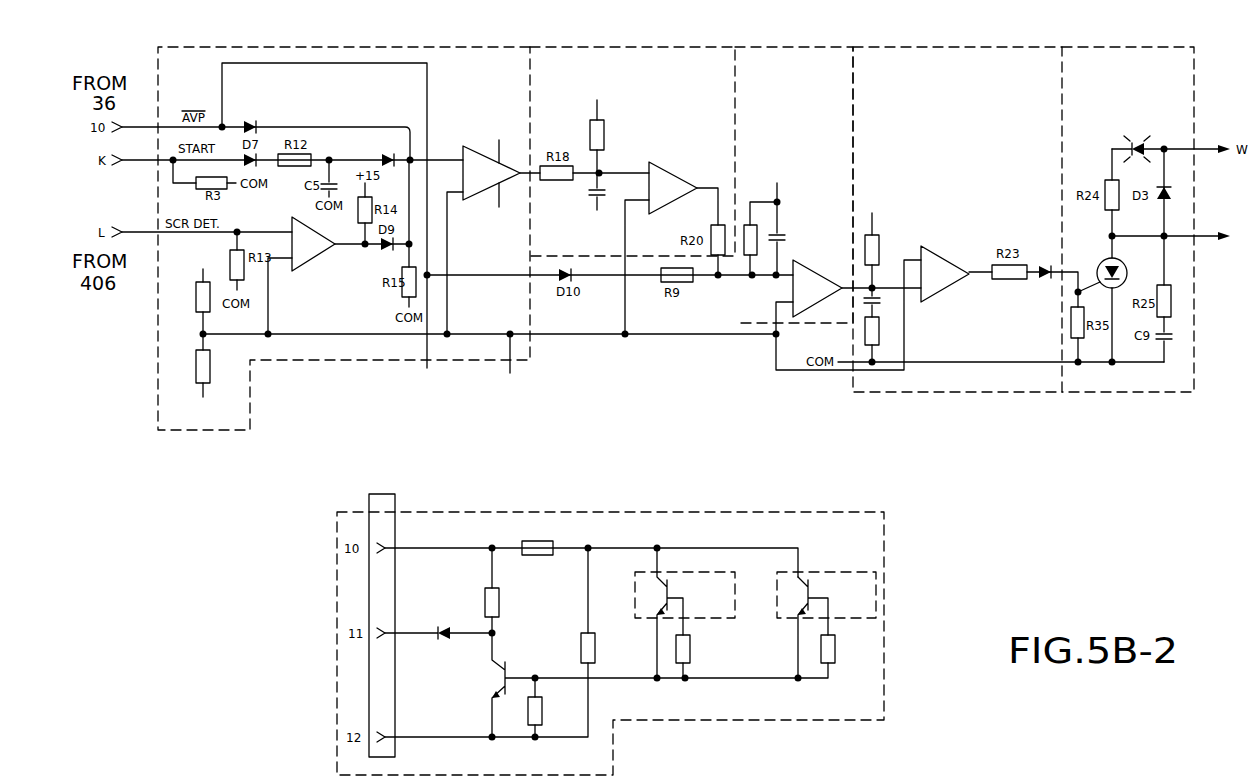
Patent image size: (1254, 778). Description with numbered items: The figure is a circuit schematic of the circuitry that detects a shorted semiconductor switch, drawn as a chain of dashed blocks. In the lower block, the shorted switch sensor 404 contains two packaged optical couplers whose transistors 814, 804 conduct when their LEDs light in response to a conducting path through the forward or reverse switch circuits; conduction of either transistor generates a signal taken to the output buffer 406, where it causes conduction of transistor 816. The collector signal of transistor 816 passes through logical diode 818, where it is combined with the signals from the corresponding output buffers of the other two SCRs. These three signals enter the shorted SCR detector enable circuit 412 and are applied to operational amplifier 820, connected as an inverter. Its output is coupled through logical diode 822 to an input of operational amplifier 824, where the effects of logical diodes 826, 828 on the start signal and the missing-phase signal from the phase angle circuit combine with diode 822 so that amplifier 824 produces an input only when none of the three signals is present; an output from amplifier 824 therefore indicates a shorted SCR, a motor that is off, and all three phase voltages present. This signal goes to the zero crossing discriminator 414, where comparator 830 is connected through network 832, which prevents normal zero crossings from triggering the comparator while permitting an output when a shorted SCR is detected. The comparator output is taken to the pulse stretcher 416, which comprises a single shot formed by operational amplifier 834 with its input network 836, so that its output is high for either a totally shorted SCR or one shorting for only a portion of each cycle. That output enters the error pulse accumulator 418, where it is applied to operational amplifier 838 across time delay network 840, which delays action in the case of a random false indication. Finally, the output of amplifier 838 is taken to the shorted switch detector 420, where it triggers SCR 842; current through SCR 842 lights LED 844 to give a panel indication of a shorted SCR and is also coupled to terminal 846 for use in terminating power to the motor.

The shorted switch sensor 404 is at (884, 568).
The output buffer 406 is at (591, 628).
The shorted SCR detector enable circuit 412 is at (334, 47).
The zero crossing discriminator 414 is at (632, 151).
The pulse stretcher 416 is at (794, 185).
The error pulse accumulator 418 is at (957, 219).
The shorted switch detector 420 is at (1128, 219).
The transistor 804 is at (805, 578).
The transistor 814 is at (665, 578).
The transistor 816 is at (506, 662).
The logical diode 818 is at (433, 628).
The operational amplifier 820 is at (291, 270).
The logical diode 822 is at (317, 259).
The operational amplifier 824 is at (472, 146).
The logical diode 826 is at (260, 127).
The logical diode 828 is at (385, 152).
The comparator 830 is at (672, 165).
The network 832 is at (591, 160).
The operational amplifier 834 is at (815, 268).
The input network 836 is at (752, 200).
The operational amplifier 838 is at (935, 258).
The time delay network 840 is at (884, 320).
The SCR 842 is at (1099, 264).
The LED 844 is at (1138, 138).
The terminal 846 is at (1201, 235).